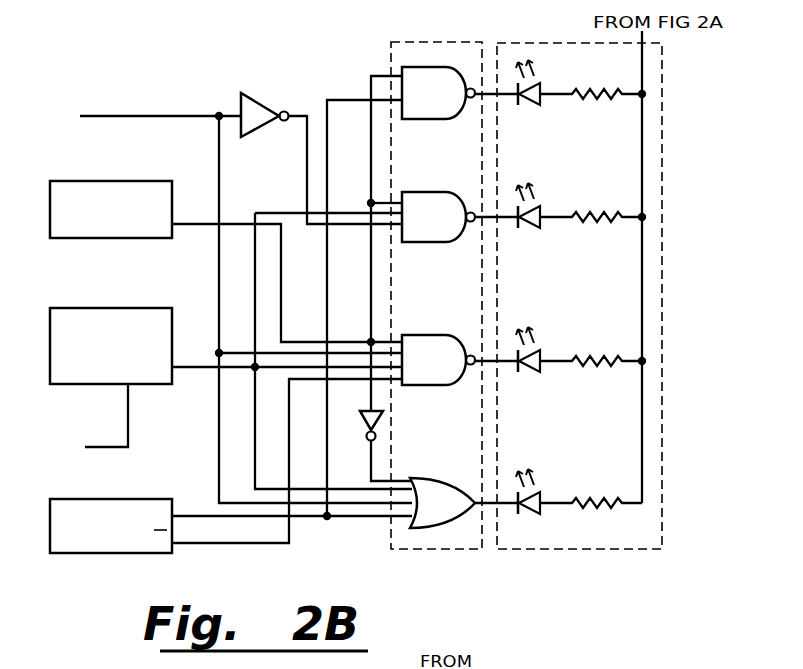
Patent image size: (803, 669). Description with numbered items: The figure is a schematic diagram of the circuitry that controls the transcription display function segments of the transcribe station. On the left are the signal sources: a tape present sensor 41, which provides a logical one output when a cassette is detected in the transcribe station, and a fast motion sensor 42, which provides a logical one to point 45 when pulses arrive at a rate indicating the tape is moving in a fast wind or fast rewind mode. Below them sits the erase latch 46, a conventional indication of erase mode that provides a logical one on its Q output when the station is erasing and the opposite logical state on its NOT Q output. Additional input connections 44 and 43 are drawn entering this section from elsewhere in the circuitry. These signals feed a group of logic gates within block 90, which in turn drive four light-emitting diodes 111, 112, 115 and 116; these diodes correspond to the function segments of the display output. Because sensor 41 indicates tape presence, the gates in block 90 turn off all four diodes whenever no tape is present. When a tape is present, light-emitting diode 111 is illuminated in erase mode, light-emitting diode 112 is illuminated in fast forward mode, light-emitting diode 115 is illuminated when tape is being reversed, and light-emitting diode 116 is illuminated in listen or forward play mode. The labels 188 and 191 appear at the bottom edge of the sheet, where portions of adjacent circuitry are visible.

The input line from FIG 2A 44 is at (139, 114).
The tape present sensor 41 is at (114, 180).
The fast motion sensor 42 is at (113, 307).
The point 45 is at (252, 370).
The input line from FIG 2A 43 is at (104, 461).
The erase latch 46 is at (152, 498).
The block 90 is at (423, 41).
The light-emitting diode 111 is at (527, 107).
The light-emitting diode 112 is at (527, 230).
The light-emitting diode 115 is at (527, 374).
The light-emitting diode 116 is at (529, 516).
The element of adjacent figure (partial) 188 is at (562, 668).
The element of adjacent figure (partial) 191 is at (677, 666).